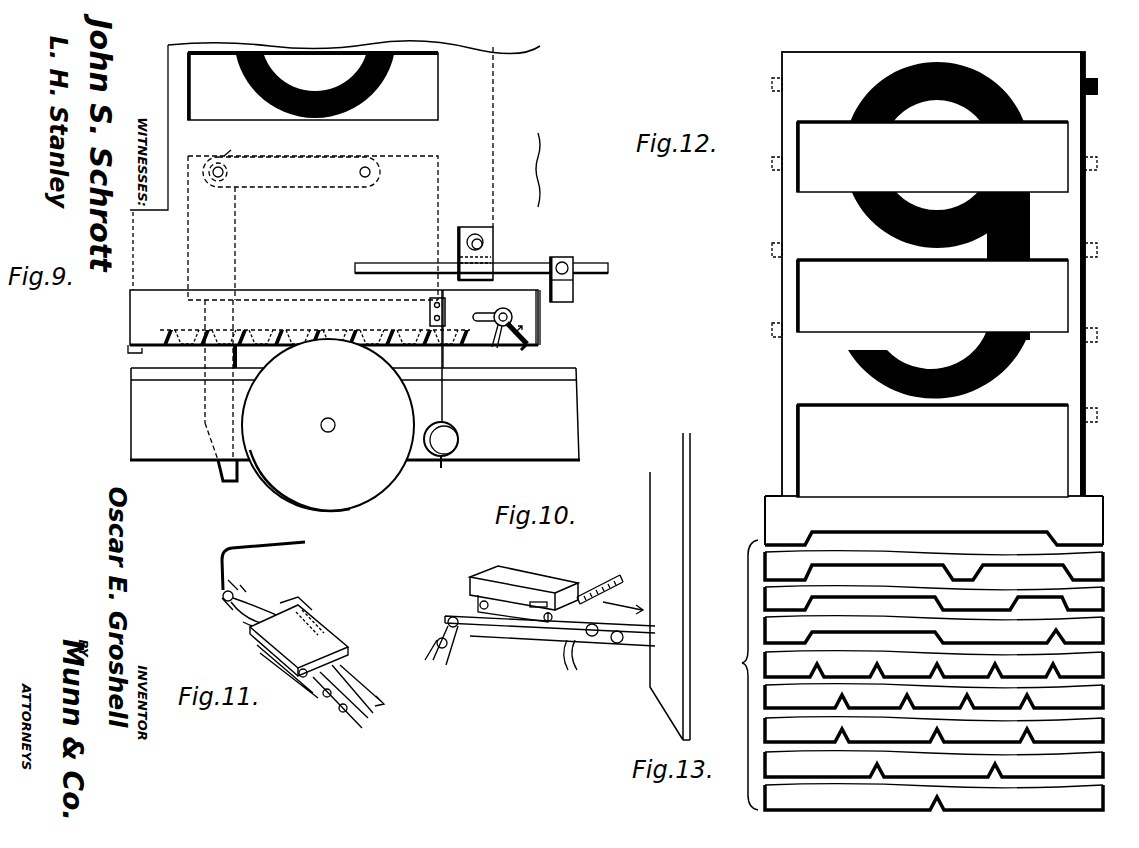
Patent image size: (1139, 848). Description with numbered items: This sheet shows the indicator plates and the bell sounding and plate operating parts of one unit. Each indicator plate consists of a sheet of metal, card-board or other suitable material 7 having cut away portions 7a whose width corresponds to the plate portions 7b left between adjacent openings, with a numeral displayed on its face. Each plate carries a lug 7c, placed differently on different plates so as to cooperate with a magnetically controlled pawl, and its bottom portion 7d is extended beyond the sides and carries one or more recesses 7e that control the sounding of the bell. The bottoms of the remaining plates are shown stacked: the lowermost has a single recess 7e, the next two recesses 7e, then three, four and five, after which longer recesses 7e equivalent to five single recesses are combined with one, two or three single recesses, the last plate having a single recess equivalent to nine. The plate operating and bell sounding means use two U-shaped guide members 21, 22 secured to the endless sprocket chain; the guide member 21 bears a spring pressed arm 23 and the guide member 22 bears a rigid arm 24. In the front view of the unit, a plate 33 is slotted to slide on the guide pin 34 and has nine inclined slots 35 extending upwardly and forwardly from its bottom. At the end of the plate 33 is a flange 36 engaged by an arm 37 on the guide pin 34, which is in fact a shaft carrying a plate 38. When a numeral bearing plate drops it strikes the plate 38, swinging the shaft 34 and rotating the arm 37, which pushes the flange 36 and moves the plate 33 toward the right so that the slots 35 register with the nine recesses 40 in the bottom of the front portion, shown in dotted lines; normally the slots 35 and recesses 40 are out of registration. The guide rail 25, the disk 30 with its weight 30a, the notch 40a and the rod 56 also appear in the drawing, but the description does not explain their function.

In FIG. 12, the plate sheet 7 is at (1076, 238).
In FIG. 12, the cut away portions 7a is at (1048, 132).
In FIG. 12, the plate portions 7b is at (820, 342).
In FIG. 12, the lug 7c is at (1088, 84).
In FIG. 12, the bottom portion 7d is at (885, 494).
In FIG. 12, the recesses 7e is at (958, 541).
In FIG. 13, the recesses 7e is at (866, 774).
In FIG. 11, the U-shaped guide member 21 is at (317, 662).
In FIG. 10, the U-shaped guide member 22 is at (535, 568).
In FIG. 11, the spring pressed arm 23 is at (263, 581).
In FIG. 10, the rigid arm 24 is at (602, 582).
In FIG. 9, the guide rail 25 is at (206, 421).
In FIG. 10, the guide rail 25 is at (680, 598).
In FIG. 9, the disk 30 is at (272, 470).
In FIG. 9, the weight 30a is at (447, 421).
In FIG. 9, the slidable plate 33 is at (290, 302).
In FIG. 9, the guide pin 34 is at (505, 310).
In FIG. 9, the inclined slots 35 is at (246, 338).
In FIG. 9, the flange 36 is at (541, 334).
In FIG. 9, the arm 37 is at (530, 344).
In FIG. 9, the plate 38 is at (458, 256).
In FIG. 9, the recesses 40 is at (196, 333).
In FIG. 9, the tooth notch 40a is at (320, 323).
In FIG. 9, the connecting rod 56 is at (581, 268).